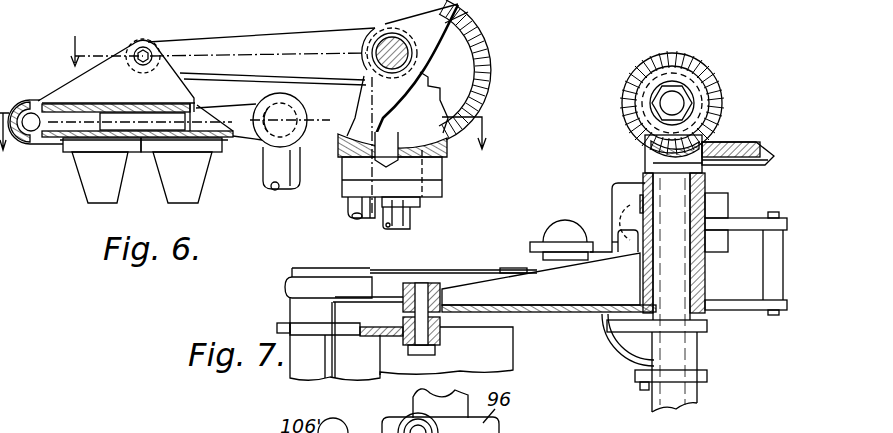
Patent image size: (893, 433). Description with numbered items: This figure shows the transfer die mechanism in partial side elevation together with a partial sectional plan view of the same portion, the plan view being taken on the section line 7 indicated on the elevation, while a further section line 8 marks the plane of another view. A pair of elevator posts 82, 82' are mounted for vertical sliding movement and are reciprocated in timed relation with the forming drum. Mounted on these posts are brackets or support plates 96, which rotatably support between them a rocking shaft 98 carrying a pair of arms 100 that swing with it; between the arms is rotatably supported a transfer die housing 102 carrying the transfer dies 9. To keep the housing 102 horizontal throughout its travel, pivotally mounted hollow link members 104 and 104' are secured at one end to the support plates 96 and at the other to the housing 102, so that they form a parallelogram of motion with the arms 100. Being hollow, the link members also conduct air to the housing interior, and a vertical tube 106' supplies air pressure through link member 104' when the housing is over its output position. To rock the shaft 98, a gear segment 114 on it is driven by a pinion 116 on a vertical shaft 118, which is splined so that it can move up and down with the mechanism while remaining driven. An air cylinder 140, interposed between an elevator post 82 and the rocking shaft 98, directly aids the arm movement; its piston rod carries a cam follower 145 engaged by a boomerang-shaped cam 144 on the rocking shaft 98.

In FIG. 6, the section line 7— 7 is at (96, 55).
In FIG. 6, the section line 8— 8 is at (252, 147).
In FIG. 6, the transfer dies 9 is at (176, 184).
In FIG. 6, the elevator post 82 is at (344, 212).
In FIG. 7, the elevator post 82' is at (623, 242).
In FIG. 6, the support plate 96 is at (436, 178).
In FIG. 7, the support plate 96 is at (718, 188).
In FIG. 6, the rocking shaft 98 is at (390, 48).
In FIG. 7, the rocking shaft 98 is at (700, 343).
In FIG. 6, the arm 100 is at (292, 32).
In FIG. 7, the arm 100 is at (563, 311).
In FIG. 6, the transfer die housing 102 is at (59, 150).
In FIG. 7, the transfer die housing 102 is at (505, 362).
In FIG. 6, the hollow link member 104 is at (263, 115).
In FIG. 7, the hollow link member 104' is at (541, 273).
In FIG. 6, the vertical tube 106' is at (266, 179).
In FIG. 7, the vertical tube 106' is at (566, 214).
In FIG. 6, the gear segment 114 is at (489, 57).
In FIG. 7, the gear segment 114 is at (752, 140).
In FIG. 6, the pinion 116 is at (436, 146).
In FIG. 7, the pinion 116 is at (724, 78).
In FIG. 6, the vertical shaft 118 is at (410, 216).
In FIG. 7, the vertical shaft 118 is at (673, 102).
In FIG. 7, the air cylinder 140 is at (631, 378).
In FIG. 6, the boomerang-shaped cam 144 is at (484, 15).
In FIG. 7, the boomerang-shaped cam 144 is at (617, 347).
In FIG. 6, the cam follower 145 is at (396, 134).